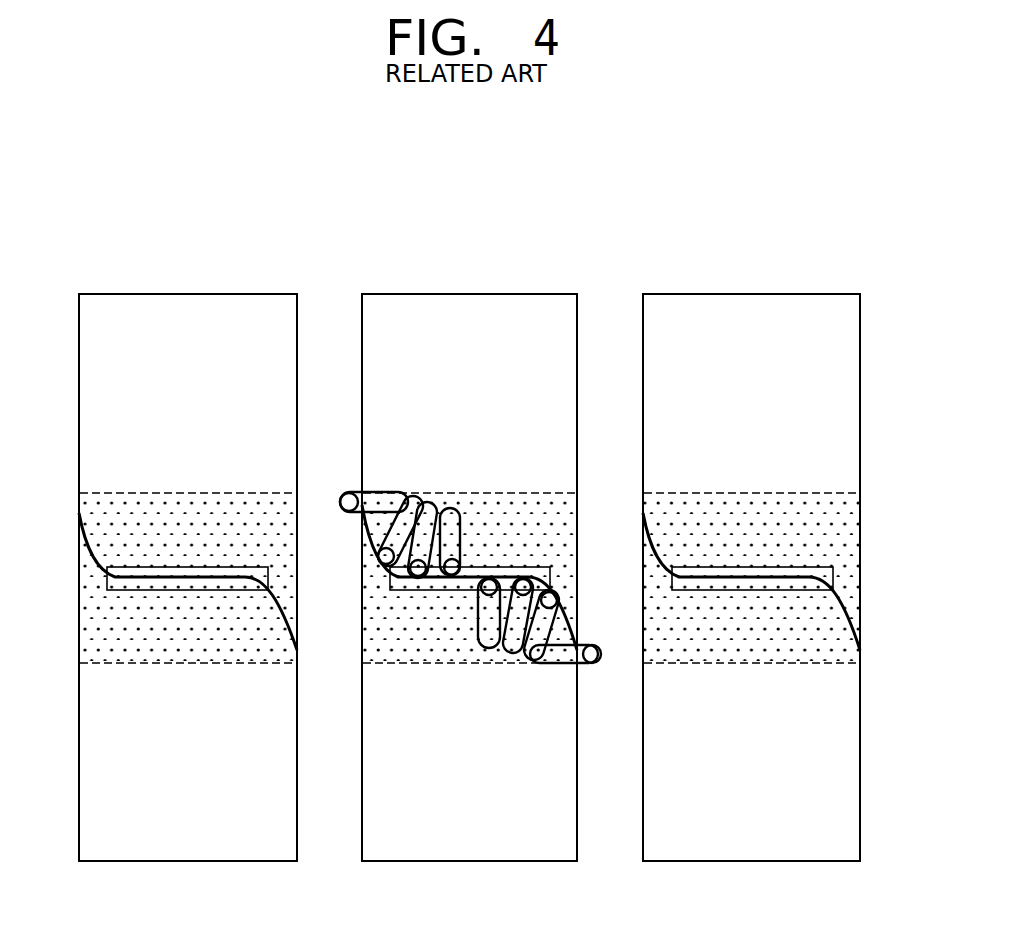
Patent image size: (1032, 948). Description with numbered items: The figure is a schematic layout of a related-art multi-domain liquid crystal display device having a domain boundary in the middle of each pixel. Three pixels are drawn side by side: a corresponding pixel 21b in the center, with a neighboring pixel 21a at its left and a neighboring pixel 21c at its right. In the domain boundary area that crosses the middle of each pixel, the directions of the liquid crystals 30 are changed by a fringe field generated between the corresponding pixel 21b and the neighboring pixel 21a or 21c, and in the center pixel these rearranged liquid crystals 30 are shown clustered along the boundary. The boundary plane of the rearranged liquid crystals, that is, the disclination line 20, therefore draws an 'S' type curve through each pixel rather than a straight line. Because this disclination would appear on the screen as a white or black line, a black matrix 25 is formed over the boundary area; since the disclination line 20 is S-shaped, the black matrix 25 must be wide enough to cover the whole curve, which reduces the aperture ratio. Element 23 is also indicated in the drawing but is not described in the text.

The neighboring pixel 21a is at (201, 294).
The corresponding pixel 21b is at (483, 294).
The neighboring pixel 21c is at (759, 294).
The disclination line 20 is at (820, 579).
The thin film transistor line 23 is at (668, 558).
The black matrix 25 is at (86, 591).
The liquid crystals 30 is at (558, 663).